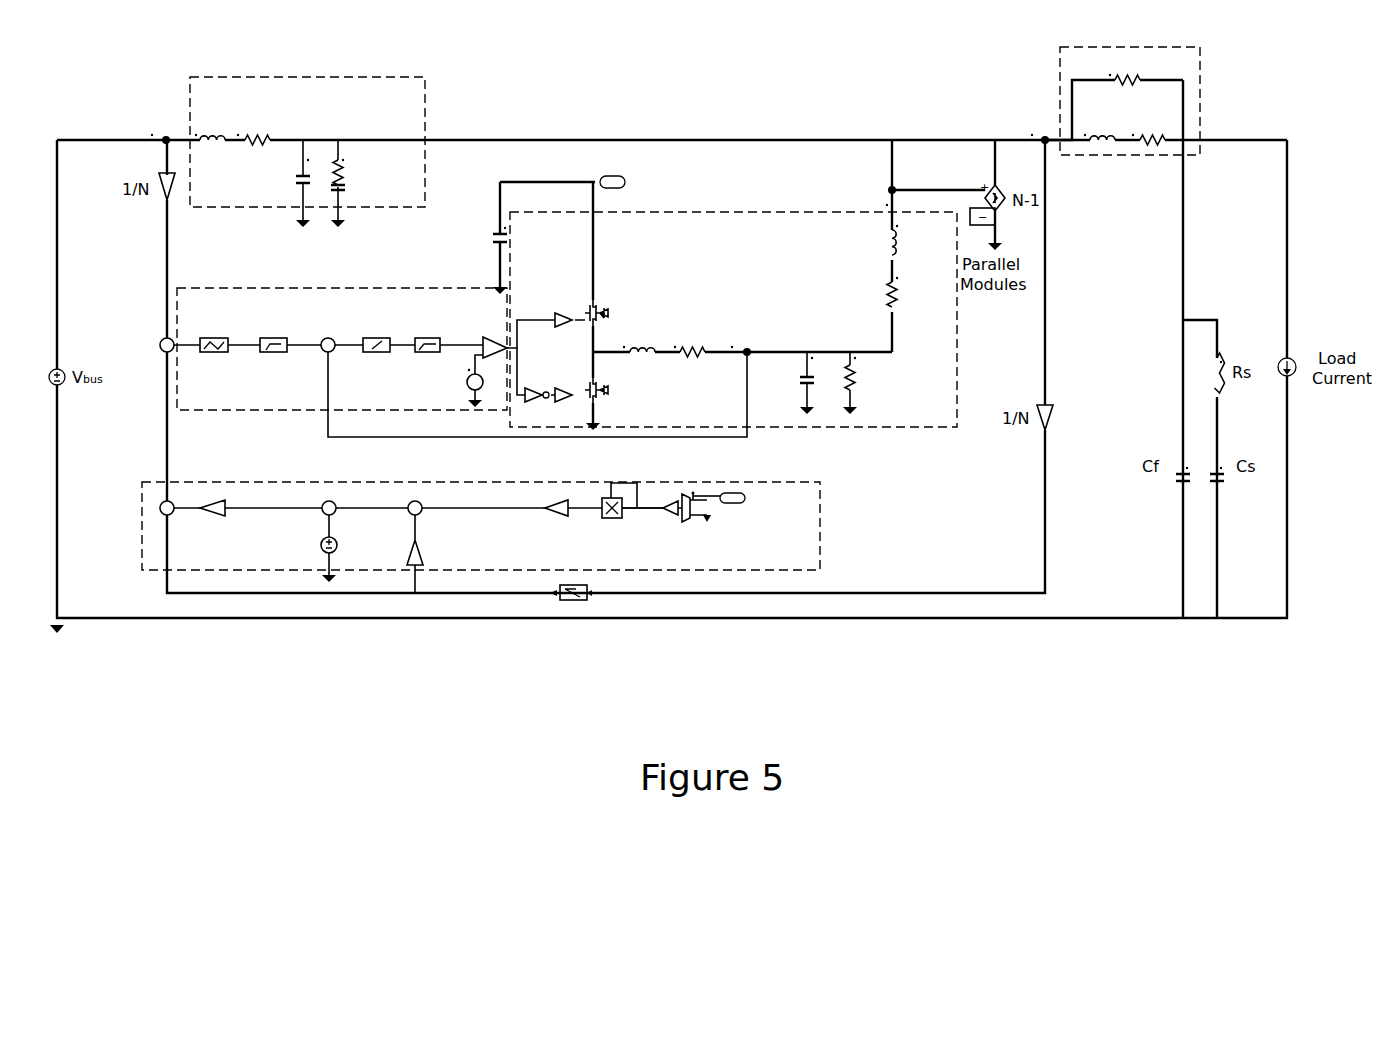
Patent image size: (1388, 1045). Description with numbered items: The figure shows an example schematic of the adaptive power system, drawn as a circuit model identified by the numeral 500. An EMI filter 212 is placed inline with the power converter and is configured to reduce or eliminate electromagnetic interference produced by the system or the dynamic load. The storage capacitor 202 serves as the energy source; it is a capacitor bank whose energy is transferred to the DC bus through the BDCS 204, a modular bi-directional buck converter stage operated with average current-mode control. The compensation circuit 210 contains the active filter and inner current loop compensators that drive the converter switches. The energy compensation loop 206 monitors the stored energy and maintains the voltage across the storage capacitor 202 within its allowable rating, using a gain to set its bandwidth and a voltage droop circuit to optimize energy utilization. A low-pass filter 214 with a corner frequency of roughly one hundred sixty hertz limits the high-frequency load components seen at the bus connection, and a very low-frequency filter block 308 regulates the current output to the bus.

The energy storage system circuit model 500 is at (497, 683).
The electromagnetic interference (EMI) filter 212 is at (425, 117).
The storage capacitor 202 is at (498, 235).
The BDCS 204 is at (737, 212).
The compensation circuit 210 is at (283, 290).
The low-pass filter 214 is at (1200, 80).
The energy compensation loop 206 is at (820, 521).
The 0.13-Hz filter 308 is at (573, 600).